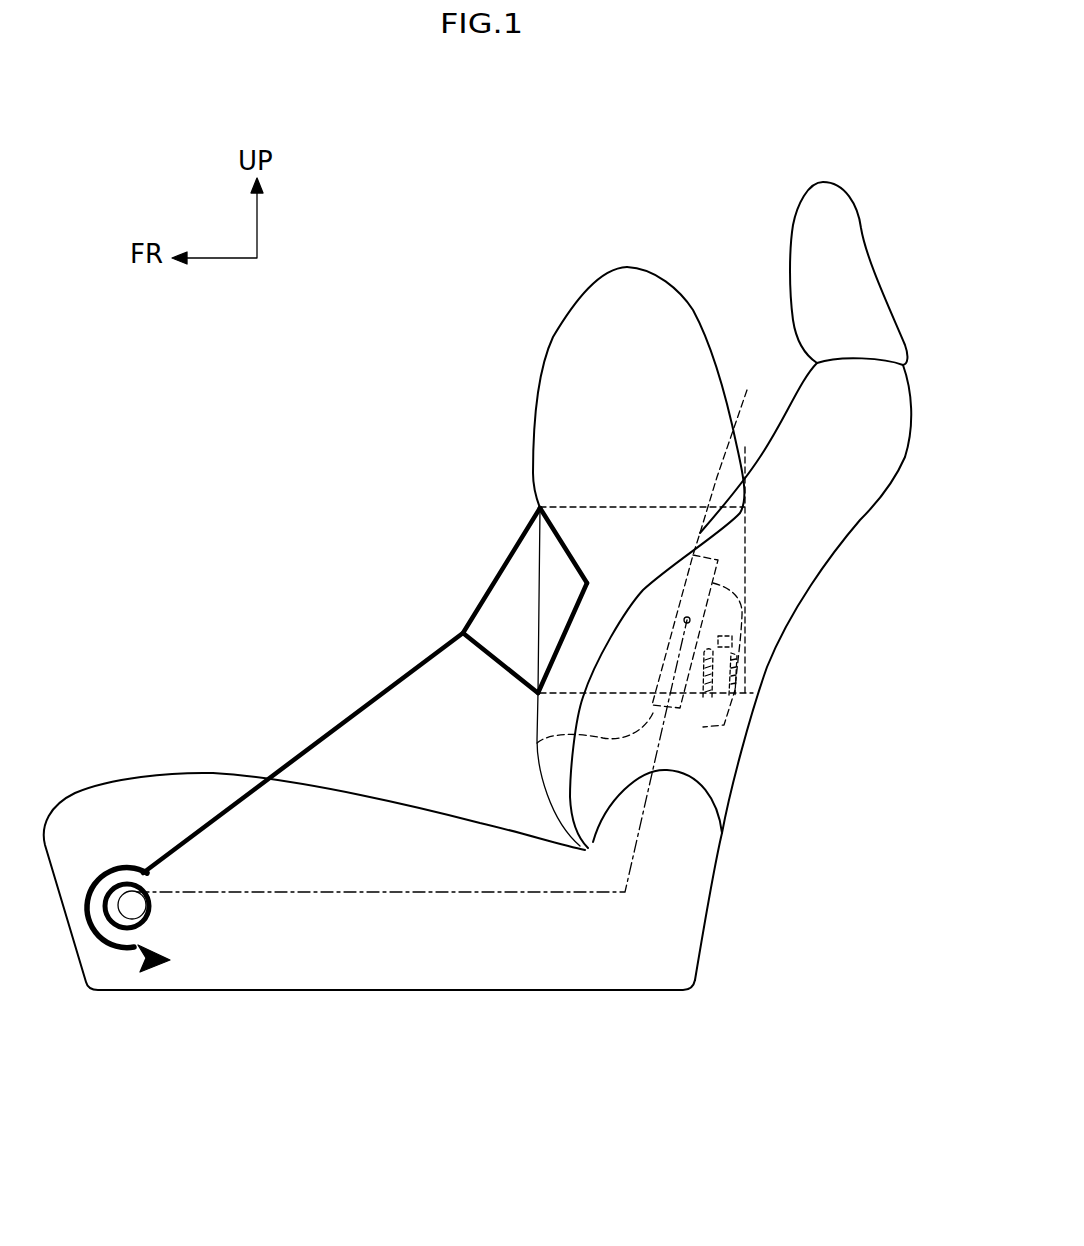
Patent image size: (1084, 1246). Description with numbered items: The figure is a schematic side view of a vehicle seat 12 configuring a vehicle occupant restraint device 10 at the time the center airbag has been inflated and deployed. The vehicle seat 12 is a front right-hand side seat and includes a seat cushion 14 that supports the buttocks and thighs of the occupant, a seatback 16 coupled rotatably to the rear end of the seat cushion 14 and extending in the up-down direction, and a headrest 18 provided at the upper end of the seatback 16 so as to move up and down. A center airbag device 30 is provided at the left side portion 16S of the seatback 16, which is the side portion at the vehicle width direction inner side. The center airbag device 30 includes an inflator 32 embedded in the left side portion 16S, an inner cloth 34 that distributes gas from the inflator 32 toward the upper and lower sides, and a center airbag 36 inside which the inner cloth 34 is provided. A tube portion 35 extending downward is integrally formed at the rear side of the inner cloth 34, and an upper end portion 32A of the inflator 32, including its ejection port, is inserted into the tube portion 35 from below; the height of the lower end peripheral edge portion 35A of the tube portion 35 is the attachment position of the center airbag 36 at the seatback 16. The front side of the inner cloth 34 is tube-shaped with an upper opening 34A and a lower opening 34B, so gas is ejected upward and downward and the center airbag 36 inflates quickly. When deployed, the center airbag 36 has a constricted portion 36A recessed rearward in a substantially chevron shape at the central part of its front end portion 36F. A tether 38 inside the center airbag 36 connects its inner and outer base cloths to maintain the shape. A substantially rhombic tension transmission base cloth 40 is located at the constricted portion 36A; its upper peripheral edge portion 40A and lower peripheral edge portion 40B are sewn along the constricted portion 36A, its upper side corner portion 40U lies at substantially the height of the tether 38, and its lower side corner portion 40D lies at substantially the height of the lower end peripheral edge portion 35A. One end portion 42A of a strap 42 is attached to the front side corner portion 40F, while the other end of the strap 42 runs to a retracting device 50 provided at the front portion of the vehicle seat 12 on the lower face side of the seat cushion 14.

The vehicle occupant restraint device 10 is at (478, 413).
The vehicle seat 12 is at (828, 180).
The seat cushion 14 is at (130, 775).
The seatback 16 is at (880, 493).
The left side portion 16S is at (737, 773).
The headrest 18 is at (866, 246).
The center airbag device 30 is at (703, 297).
The inflator 32 is at (723, 773).
The upper end portion 32A is at (742, 631).
The inner cloth 34 is at (725, 597).
The upper opening 34A is at (737, 455).
The lower opening 34B is at (537, 743).
The tube portion 35 is at (745, 667).
The lower end peripheral edge portion 35A is at (730, 730).
The center airbag 36 is at (615, 267).
The front end portion 36F is at (533, 475).
The constricted portion 36A is at (585, 583).
The tether 38 is at (638, 506).
The tension transmission base cloth 40 is at (500, 622).
The upper side corner portion 40U is at (537, 503).
The lower side corner portion 40D is at (538, 695).
The front side corner portion 40F is at (465, 632).
The upper peripheral edge portion 40A is at (560, 528).
The lower peripheral edge portion 40B is at (567, 637).
The strap 42 is at (285, 760).
The one end portion 42A is at (463, 640).
The retracting device 50 is at (172, 930).